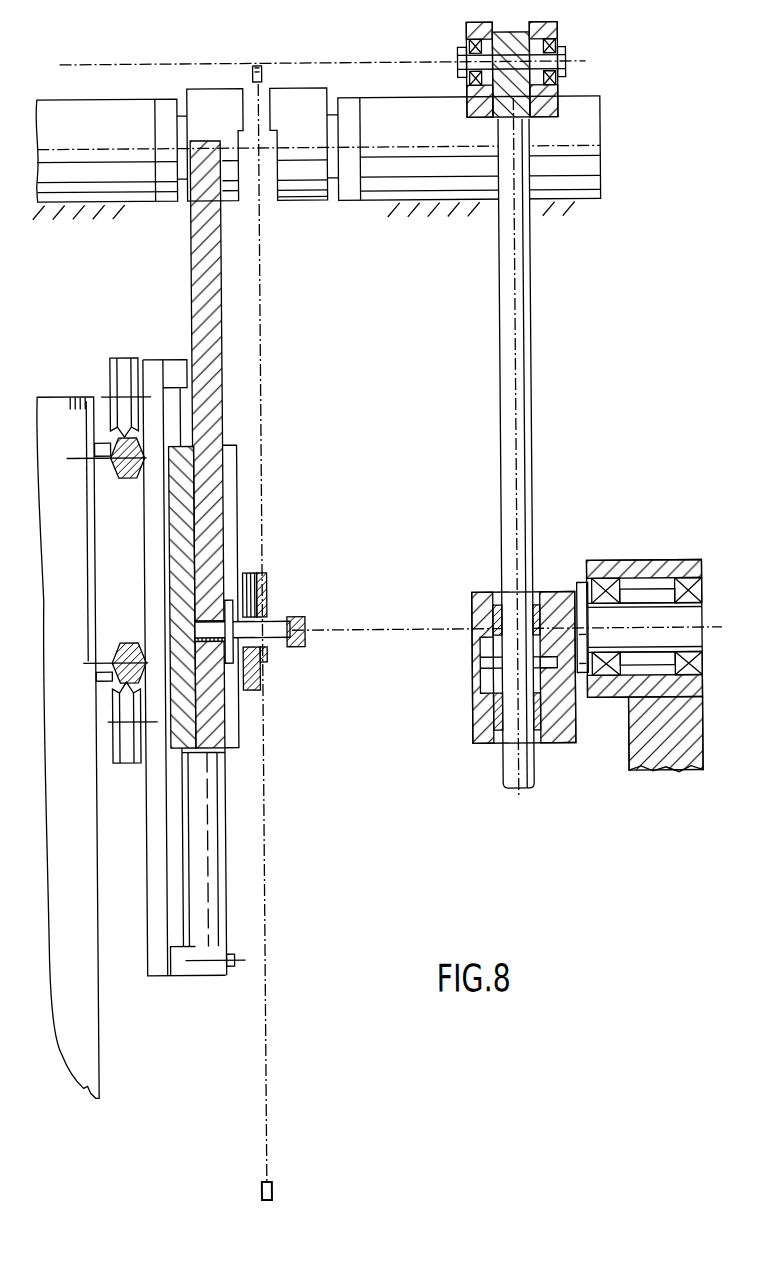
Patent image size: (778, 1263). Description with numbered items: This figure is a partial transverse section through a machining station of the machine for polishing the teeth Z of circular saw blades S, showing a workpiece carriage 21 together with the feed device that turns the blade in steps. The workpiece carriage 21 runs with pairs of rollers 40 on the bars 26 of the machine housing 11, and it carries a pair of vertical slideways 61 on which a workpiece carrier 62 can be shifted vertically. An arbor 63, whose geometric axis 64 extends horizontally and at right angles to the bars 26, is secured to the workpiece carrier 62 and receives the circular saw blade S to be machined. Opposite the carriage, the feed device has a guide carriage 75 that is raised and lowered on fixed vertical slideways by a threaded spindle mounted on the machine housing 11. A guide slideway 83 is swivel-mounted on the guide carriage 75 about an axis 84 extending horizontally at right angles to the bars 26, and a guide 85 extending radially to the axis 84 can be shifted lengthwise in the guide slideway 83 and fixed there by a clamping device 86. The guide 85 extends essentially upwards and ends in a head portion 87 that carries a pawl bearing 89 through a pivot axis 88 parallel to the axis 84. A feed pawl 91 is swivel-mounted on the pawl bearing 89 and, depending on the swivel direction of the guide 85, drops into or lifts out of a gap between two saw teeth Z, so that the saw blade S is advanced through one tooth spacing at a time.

The machine housing 11 is at (77, 210).
The workpiece carriage 21 is at (157, 963).
The bar 26 is at (110, 461).
The roller 40 is at (114, 356).
The vertical slideway 61 is at (210, 878).
The workpiece carrier 62 is at (215, 724).
The arbor 63 is at (277, 621).
The geometric axis 64 is at (322, 635).
The guide carriage 75 is at (670, 750).
The guide slideway 83 is at (482, 732).
The axis 84 is at (712, 628).
The guide 85 is at (528, 470).
The clamping device 86 is at (478, 685).
The head portion 87 is at (527, 109).
The pivot axis 88 is at (422, 60).
The pawl bearing 89 is at (554, 30).
The feed pawl 91 is at (272, 78).
The circular saw blade S is at (264, 1103).
The saw tooth Z is at (273, 1190).